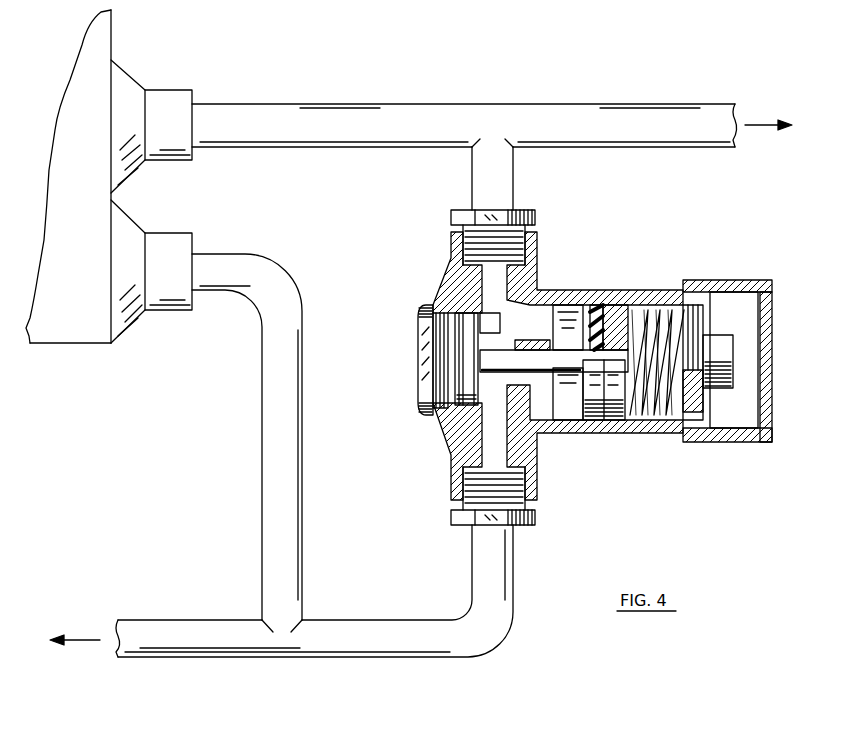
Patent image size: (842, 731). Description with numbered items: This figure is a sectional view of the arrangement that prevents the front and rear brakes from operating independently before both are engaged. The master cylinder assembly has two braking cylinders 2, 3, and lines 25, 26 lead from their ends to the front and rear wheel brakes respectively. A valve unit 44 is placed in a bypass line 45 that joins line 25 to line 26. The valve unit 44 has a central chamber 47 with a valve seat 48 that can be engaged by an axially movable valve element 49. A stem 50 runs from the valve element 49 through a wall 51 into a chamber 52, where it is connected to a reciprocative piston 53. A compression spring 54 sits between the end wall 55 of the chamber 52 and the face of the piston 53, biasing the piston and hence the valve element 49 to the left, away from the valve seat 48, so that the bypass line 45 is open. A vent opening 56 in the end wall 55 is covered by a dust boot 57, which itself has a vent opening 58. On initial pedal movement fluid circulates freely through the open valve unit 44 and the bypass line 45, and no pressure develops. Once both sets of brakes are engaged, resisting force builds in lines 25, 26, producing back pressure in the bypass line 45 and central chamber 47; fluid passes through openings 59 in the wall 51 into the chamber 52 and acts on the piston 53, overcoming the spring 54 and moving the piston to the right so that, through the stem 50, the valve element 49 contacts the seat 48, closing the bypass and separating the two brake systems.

The braking cylinder 2 is at (93, 76).
The braking cylinder 3 is at (72, 318).
The line 25 is at (352, 115).
The line 26 is at (284, 470).
The valve unit 44 is at (579, 287).
The bypass line 45 is at (413, 630).
The central chamber 47 is at (453, 413).
The valve seat 48 is at (482, 393).
The valve element 49 is at (465, 337).
The stem 50 is at (551, 362).
The wall 51 is at (544, 318).
The chamber 52 is at (570, 412).
The piston 53 is at (612, 412).
The compression spring 54 is at (640, 330).
The end wall 55 is at (677, 312).
The vent opening 56 is at (703, 407).
The dust boot 57 is at (725, 422).
The vent opening 58 is at (773, 307).
The openings 59 is at (538, 395).